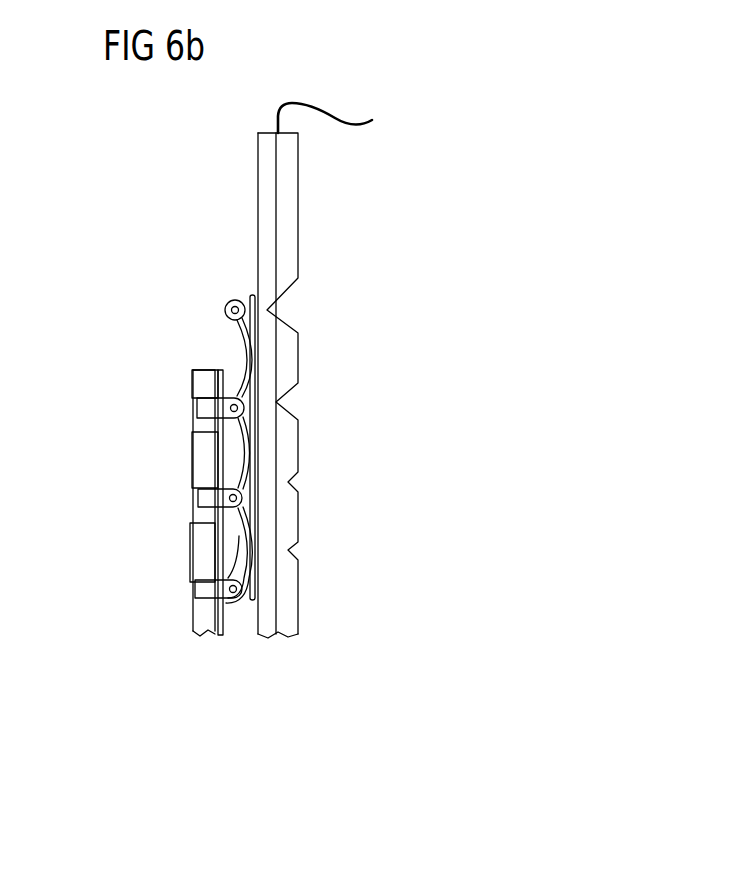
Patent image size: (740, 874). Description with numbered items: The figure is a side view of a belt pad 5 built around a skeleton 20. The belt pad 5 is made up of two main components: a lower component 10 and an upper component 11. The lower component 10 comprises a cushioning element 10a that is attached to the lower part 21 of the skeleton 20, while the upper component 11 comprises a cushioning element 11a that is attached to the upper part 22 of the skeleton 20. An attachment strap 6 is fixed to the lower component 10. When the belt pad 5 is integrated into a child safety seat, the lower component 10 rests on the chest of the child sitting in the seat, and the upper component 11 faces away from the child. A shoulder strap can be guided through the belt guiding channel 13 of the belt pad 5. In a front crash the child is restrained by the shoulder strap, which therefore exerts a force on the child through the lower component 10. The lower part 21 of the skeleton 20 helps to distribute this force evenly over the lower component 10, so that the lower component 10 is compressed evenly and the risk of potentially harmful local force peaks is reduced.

The belt pad 5 is at (152, 208).
The attachment strap 6 is at (283, 110).
The lower component 10 is at (311, 429).
The cushioning element 10a is at (290, 198).
The upper component 11 is at (189, 658).
The cushioning element 11a is at (202, 462).
The belt guiding channel 13 is at (224, 658).
The skeleton 20 is at (192, 592).
The lower part 21 is at (238, 333).
The upper part 22 is at (249, 360).